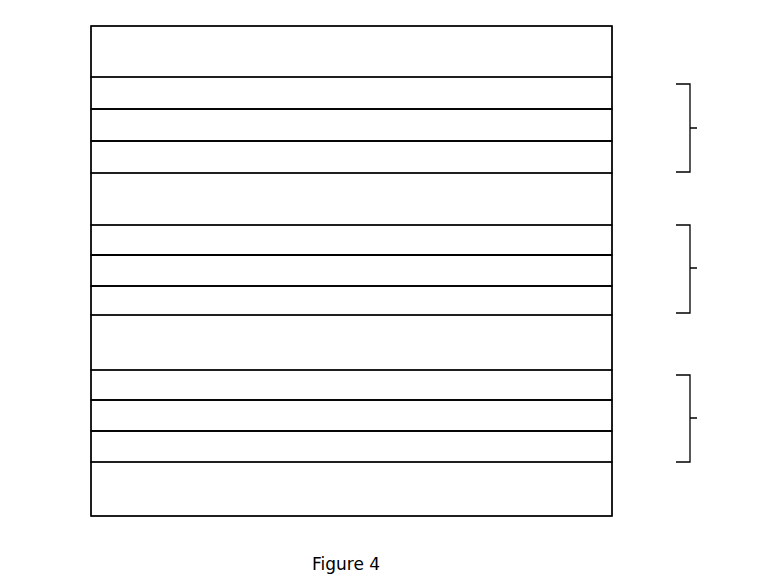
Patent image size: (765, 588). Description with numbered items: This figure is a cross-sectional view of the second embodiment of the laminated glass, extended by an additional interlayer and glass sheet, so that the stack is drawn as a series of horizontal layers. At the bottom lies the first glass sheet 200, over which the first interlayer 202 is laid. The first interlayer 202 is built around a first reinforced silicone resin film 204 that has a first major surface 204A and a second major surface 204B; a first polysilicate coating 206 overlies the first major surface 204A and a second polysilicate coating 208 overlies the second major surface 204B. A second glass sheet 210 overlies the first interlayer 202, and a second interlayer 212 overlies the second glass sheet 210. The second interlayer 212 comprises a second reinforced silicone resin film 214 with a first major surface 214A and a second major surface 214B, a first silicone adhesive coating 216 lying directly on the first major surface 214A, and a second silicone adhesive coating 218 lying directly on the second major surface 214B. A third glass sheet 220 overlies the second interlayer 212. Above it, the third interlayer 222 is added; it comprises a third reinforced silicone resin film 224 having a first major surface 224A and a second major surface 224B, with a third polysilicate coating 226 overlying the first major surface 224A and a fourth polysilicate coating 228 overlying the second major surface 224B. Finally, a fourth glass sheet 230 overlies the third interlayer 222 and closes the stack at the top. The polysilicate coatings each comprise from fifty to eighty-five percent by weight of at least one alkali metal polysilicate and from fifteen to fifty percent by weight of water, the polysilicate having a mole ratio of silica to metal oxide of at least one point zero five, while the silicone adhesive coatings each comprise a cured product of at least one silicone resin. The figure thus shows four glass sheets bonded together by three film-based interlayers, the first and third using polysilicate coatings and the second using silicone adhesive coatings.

The first glass sheet 200 is at (600, 490).
The first interlayer 202 is at (705, 418).
The first reinforced silicone resin film 204 is at (600, 417).
The first major surface of the first reinforced silicone resin film 204A is at (110, 432).
The second major surface of the first reinforced silicone resin film 204B is at (110, 399).
The first polysilicate coating 206 is at (600, 445).
The second polysilicate coating 208 is at (600, 388).
The second glass sheet 210 is at (600, 343).
The second interlayer 212 is at (705, 269).
The second reinforced silicone resin film 214 is at (600, 268).
The first major surface of the second reinforced silicone resin film 214A is at (110, 287).
The second major surface of the second reinforced silicone resin film 214B is at (110, 254).
The first silicone adhesive coating 216 is at (600, 295).
The second silicone adhesive coating 218 is at (600, 240).
The third glass sheet 220 is at (600, 198).
The third interlayer 222 is at (705, 128).
The third reinforced silicone resin film 224 is at (600, 128).
The first major surface of the third reinforced silicone resin film 224A is at (110, 142).
The second major surface of the third reinforced silicone resin film 224B is at (110, 108).
The third polysilicate coating 226 is at (600, 155).
The fourth polysilicate coating 228 is at (600, 100).
The fourth glass sheet 230 is at (600, 58).